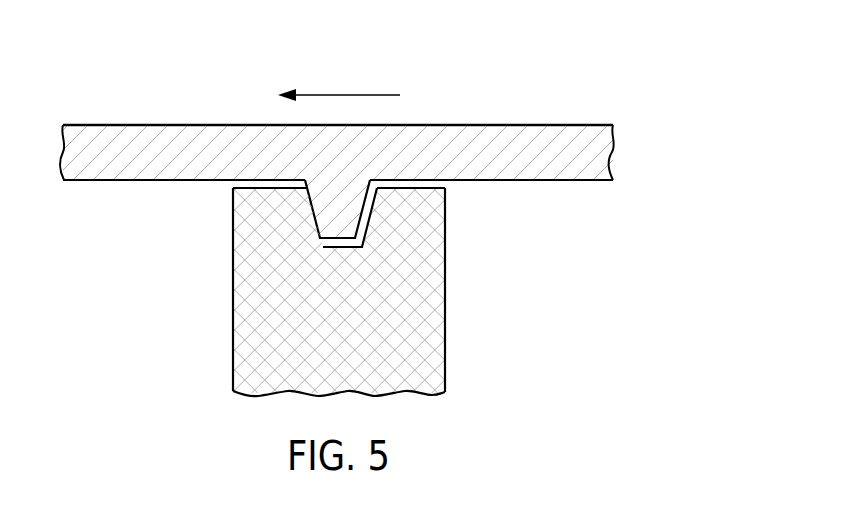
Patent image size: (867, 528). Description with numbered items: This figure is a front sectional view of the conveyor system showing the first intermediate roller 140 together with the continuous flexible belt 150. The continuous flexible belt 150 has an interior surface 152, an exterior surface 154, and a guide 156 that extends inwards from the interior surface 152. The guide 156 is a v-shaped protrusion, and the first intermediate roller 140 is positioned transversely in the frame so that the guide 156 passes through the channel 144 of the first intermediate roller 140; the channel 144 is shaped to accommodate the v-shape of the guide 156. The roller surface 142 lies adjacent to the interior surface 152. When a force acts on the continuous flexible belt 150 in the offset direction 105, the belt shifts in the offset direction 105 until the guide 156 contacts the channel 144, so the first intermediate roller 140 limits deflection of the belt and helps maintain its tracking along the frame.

The offset direction 105 is at (352, 95).
The first intermediate roller 140 is at (392, 292).
The top surface of base member 142 is at (252, 188).
The channel 144 is at (325, 247).
The continuous flexible belt 150 is at (371, 137).
The interior surface 152 is at (578, 181).
The exterior surface 154 is at (93, 125).
The guide 156 is at (367, 208).